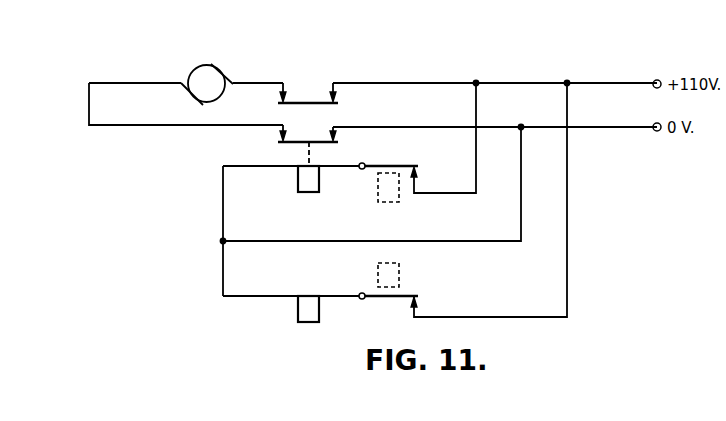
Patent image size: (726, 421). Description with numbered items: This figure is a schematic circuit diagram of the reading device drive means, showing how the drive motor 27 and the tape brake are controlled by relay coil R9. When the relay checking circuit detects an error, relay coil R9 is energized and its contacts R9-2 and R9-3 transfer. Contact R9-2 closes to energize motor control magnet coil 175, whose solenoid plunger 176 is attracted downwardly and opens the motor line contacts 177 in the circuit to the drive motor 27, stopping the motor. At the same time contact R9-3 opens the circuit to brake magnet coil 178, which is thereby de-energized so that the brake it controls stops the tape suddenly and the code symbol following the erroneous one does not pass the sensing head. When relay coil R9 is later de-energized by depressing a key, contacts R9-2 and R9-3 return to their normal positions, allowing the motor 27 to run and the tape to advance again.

The drive motor 27 is at (193, 72).
The solenoid plunger 176 is at (312, 122).
The motor line contacts 177 is at (300, 136).
The motor control magnet coil 175 is at (298, 185).
The brake magnet coil 178 is at (298, 312).
The relay coil R9 is at (377, 192).
The contact R9-2 is at (418, 176).
The contact R9-3 is at (418, 300).